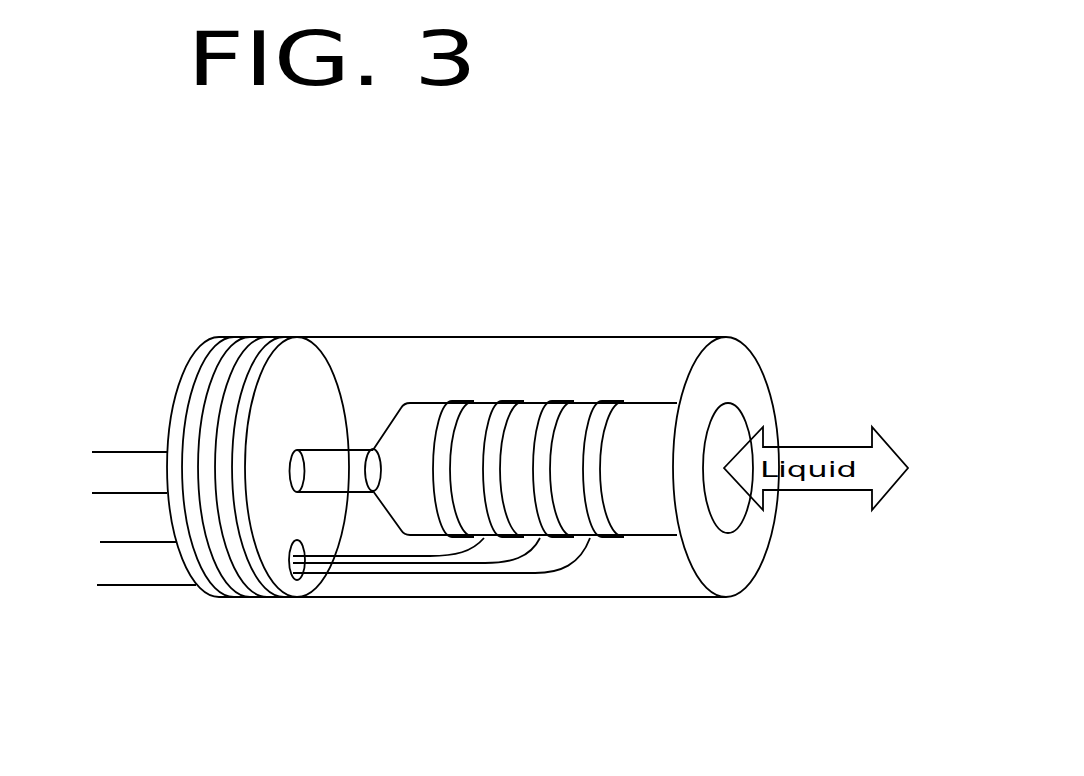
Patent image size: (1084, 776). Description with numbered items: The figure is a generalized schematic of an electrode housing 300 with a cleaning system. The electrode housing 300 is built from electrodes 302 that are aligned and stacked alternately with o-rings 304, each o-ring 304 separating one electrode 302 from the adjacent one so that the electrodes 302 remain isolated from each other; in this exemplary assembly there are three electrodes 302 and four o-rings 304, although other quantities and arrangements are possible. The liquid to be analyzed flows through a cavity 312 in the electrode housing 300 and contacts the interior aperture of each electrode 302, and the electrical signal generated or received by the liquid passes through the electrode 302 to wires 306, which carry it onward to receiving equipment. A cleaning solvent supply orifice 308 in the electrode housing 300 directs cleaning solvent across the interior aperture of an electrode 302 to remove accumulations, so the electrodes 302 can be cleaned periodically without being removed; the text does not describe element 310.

The electrode housing 300 is at (433, 175).
The electrode 302 is at (594, 402).
The o-ring 304 is at (620, 538).
The wires 306 is at (447, 573).
The cleaning solvent supply orifice 308 is at (143, 483).
The lead wire bundle 310 is at (157, 576).
The cavity 312 is at (732, 428).